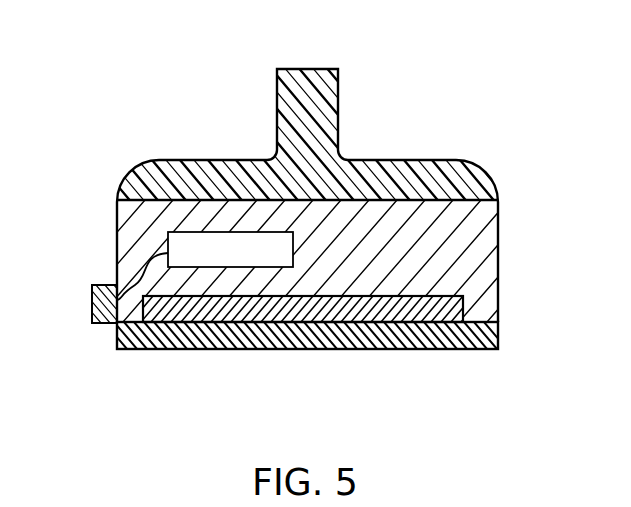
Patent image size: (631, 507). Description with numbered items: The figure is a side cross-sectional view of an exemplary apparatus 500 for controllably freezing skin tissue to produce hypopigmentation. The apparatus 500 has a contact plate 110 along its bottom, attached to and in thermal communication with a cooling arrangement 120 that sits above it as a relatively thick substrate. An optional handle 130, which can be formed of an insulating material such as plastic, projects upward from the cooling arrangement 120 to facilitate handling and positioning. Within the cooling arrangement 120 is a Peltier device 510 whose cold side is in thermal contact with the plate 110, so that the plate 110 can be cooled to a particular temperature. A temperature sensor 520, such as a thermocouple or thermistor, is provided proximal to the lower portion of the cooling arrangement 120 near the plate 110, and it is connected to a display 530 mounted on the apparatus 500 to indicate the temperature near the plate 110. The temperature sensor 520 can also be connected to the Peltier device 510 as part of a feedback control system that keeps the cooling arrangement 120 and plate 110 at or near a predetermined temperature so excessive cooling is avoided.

The apparatus 500 is at (506, 108).
The contact plate 110 is at (207, 352).
The cooling arrangement 120 is at (487, 240).
The handle 130 is at (283, 72).
The Peltier device 510 is at (467, 290).
The temperature sensor 520 is at (105, 285).
The display 530 is at (182, 230).